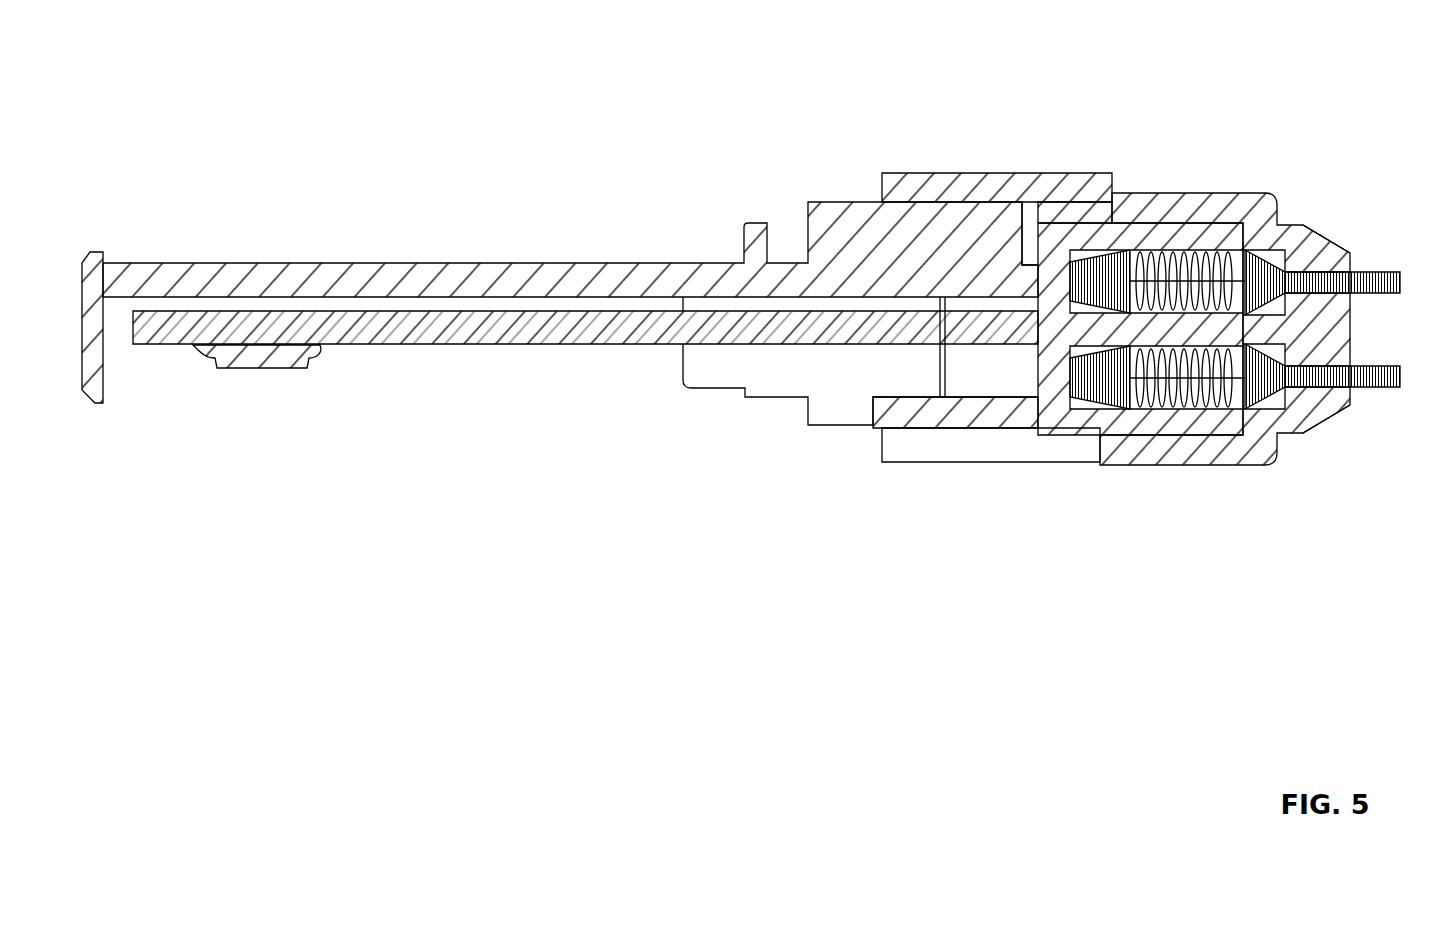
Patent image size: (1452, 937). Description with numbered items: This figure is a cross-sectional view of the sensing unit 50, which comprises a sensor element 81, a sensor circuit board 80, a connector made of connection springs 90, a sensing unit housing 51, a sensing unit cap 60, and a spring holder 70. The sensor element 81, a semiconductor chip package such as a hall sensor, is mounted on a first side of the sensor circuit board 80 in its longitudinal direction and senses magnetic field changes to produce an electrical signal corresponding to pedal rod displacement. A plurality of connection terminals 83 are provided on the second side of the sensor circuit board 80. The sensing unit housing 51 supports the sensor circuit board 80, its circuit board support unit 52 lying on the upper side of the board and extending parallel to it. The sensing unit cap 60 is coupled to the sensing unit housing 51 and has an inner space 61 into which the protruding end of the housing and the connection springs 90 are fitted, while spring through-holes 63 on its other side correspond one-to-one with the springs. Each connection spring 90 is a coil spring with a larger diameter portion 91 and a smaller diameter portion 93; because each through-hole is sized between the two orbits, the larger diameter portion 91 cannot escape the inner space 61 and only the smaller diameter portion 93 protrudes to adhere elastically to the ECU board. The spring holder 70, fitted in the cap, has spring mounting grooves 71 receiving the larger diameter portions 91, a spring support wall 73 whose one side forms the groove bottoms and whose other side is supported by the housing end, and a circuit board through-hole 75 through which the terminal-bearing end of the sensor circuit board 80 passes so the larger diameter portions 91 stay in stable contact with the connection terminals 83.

The sensing unit 50 is at (630, 160).
The sensing unit housing 51 is at (440, 262).
The circuit board support unit 52 is at (302, 258).
The sensing unit cap 60 is at (1243, 468).
The inner space 61 is at (1247, 238).
The spring through-holes 63 is at (1330, 250).
The spring holder 70 is at (1057, 437).
The spring mounting grooves 71 is at (1085, 225).
The spring support wall 73 is at (1040, 300).
The circuit board through-hole 75 is at (1003, 335).
The sensor circuit board 80 is at (461, 345).
The sensor element 81 is at (259, 370).
The connection terminals 83 is at (1128, 235).
The connection springs 90 is at (1197, 238).
The larger diameter portion 91 is at (1177, 240).
The smaller diameter portion 93 is at (1390, 272).